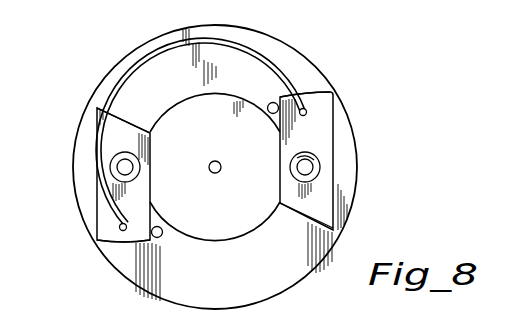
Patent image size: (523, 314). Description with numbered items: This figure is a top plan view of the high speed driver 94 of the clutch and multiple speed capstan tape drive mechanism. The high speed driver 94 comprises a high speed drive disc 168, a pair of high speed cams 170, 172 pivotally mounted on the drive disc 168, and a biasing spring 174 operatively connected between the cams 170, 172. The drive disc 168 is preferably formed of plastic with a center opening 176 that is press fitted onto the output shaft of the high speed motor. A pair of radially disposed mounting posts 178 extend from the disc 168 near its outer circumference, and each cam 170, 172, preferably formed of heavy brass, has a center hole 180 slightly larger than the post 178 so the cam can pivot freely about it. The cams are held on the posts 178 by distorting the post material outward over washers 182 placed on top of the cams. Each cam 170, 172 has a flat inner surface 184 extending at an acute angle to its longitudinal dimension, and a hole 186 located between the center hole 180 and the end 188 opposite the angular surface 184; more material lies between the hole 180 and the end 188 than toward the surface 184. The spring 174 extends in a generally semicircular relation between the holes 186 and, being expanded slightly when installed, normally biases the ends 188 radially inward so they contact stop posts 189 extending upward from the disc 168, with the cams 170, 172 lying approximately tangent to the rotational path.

The high speed driver 94 is at (328, 73).
The high speed drive disc 168 is at (276, 277).
The high speed cam 170 is at (103, 212).
The high speed cam 172 is at (322, 142).
The biasing spring 174 is at (133, 65).
The center opening 176 is at (215, 164).
The mounting post 178 is at (139, 170).
The center hole 180 is at (128, 164).
The washer 182 is at (320, 163).
The flat inner surface 184 is at (134, 124).
The hole 186 is at (306, 113).
The end 188 is at (331, 93).
The stop post 189 is at (270, 103).